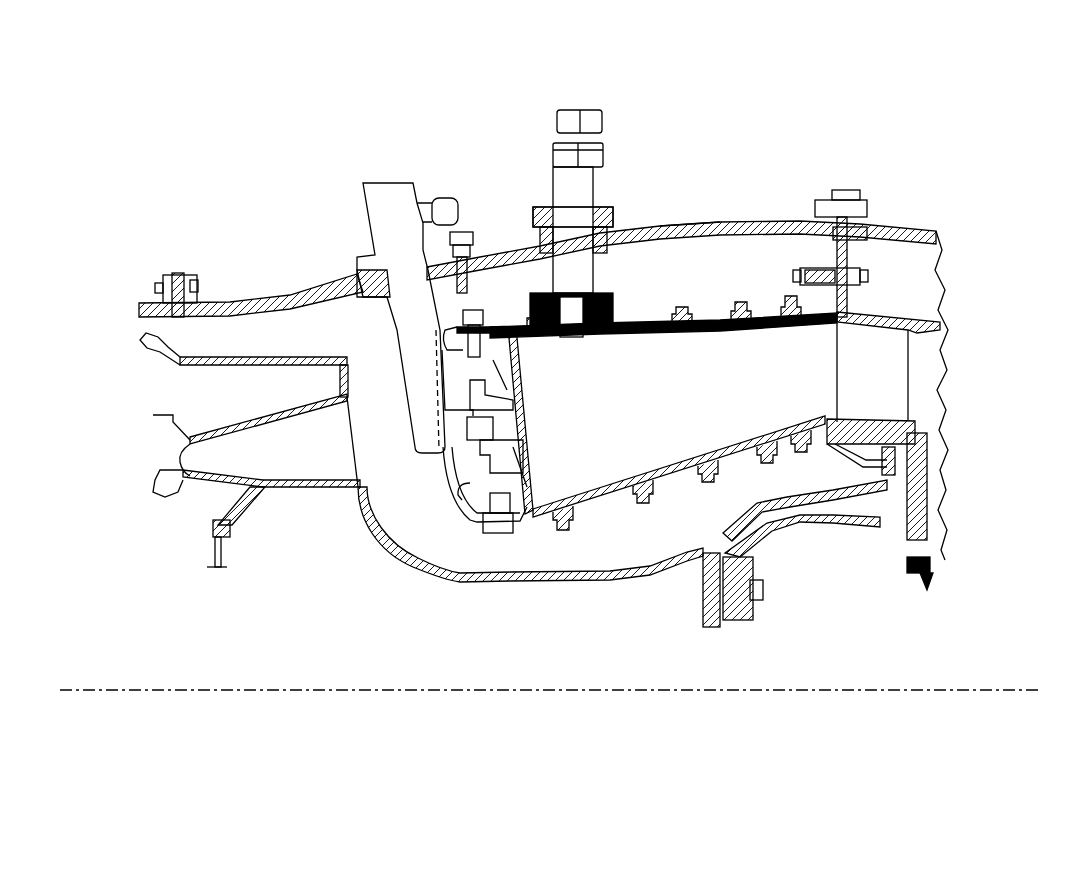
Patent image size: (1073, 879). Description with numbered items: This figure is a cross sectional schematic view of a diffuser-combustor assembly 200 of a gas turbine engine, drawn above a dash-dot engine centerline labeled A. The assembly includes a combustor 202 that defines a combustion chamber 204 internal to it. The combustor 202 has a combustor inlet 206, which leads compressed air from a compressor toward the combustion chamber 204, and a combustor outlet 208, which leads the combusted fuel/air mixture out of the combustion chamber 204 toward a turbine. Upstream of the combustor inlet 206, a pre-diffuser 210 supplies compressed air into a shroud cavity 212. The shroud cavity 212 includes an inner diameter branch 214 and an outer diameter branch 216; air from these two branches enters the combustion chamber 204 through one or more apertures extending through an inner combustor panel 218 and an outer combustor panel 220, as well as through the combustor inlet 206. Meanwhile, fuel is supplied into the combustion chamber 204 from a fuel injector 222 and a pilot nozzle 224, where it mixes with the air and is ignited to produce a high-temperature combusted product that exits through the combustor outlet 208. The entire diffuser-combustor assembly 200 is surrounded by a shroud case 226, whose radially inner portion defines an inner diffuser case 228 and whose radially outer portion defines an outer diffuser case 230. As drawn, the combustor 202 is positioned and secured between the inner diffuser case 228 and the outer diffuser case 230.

The diffuser-combustor assembly 200 is at (268, 112).
The combustor 202 is at (713, 292).
The combustion chamber 204 is at (714, 387).
The combustor inlet 206 is at (424, 477).
The combustor outlet 208 is at (850, 372).
The pre-diffuser 210 is at (253, 413).
The shroud cavity 212 is at (407, 447).
The inner diameter branch 214 is at (575, 555).
The outer diameter branch 216 is at (640, 265).
The inner combustor panel 218 is at (690, 468).
The outer combustor panel 220 is at (663, 320).
The fuel injector 222 is at (363, 210).
The pilot nozzle 224 is at (497, 417).
The shroud case 226 is at (767, 221).
The inner diffuser case 228 is at (487, 581).
The outer diffuser case 230 is at (690, 221).
The engine axis A is at (963, 692).